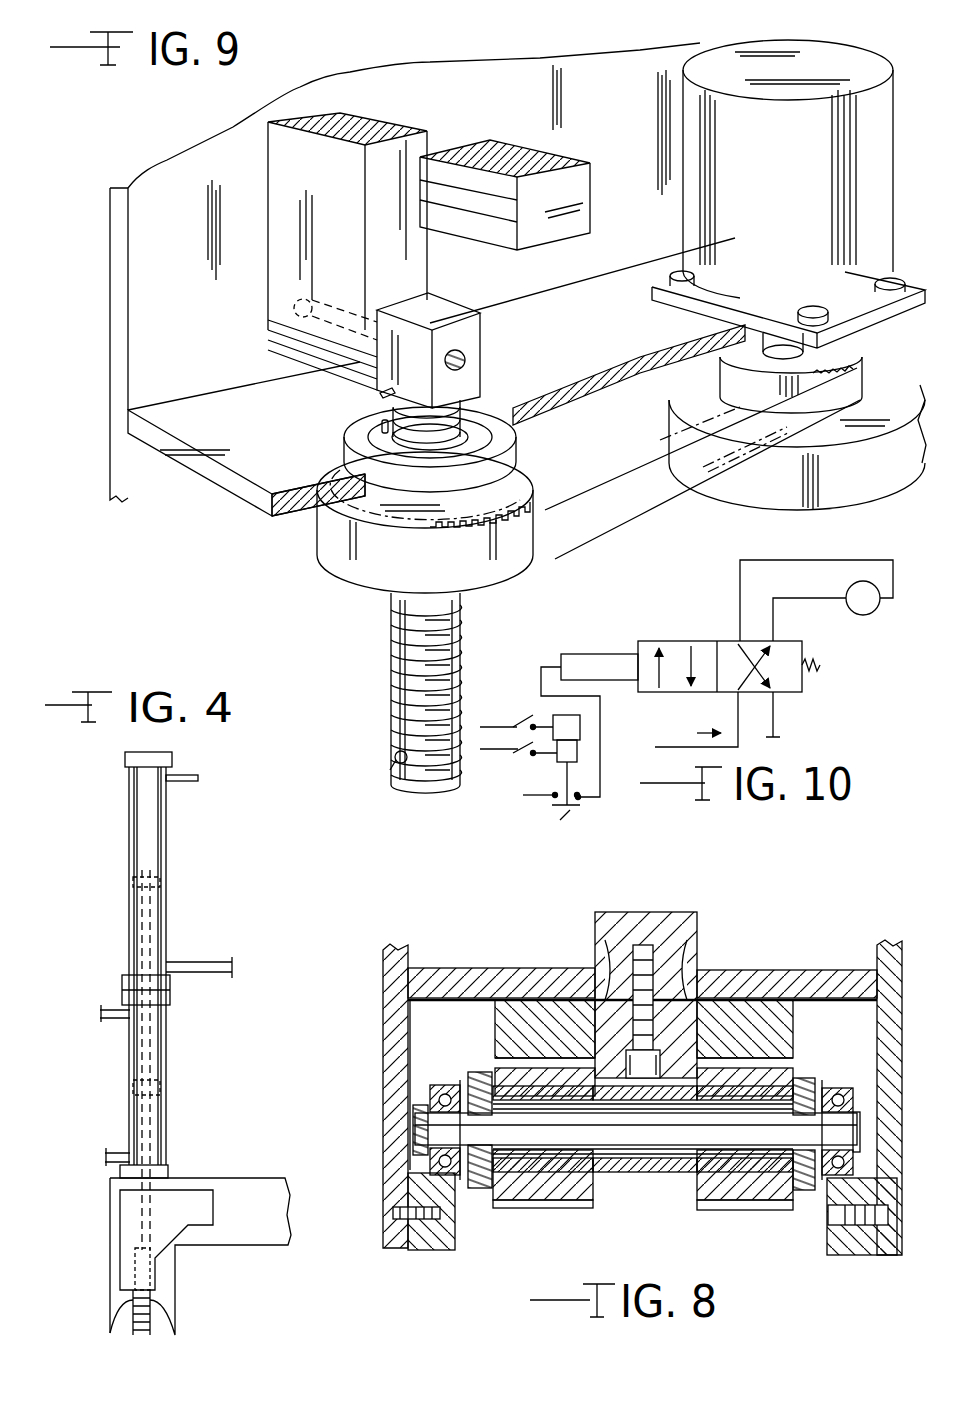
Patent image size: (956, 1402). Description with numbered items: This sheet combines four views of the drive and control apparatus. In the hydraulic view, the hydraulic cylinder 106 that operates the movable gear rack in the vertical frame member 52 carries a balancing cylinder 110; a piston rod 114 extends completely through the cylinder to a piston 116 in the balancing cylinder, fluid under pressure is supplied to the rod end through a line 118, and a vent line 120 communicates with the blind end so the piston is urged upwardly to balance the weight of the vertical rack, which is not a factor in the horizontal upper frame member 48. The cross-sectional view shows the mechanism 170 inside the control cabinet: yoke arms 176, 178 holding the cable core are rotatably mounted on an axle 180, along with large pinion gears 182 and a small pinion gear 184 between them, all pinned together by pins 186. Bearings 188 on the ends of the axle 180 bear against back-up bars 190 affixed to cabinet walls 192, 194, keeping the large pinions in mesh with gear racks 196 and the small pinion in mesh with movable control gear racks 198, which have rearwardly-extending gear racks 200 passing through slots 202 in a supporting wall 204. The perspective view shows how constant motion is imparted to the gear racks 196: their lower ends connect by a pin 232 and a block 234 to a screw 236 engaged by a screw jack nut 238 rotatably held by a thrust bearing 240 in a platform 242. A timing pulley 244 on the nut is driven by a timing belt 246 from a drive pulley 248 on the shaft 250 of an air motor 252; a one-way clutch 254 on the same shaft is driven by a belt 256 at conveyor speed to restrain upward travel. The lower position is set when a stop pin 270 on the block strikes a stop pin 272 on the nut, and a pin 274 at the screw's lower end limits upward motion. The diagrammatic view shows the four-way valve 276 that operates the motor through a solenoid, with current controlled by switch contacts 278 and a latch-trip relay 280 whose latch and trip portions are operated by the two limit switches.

In FIG. 4, the upper frame member 48 is at (258, 1178).
In FIG. 4, the vertical frame member 52 is at (180, 1277).
In FIG. 4, the hydraulic cylinder 106 is at (164, 1090).
In FIG. 4, the balancing cylinder 110 is at (126, 908).
In FIG. 4, the piston rod 114 is at (148, 1050).
In FIG. 4, the piston 116 is at (148, 870).
In FIG. 4, the line 118 is at (168, 960).
In FIG. 4, the vent line 120 is at (188, 781).
In FIG. 8, the mechanism 170 is at (522, 1242).
In FIG. 8, the arm 176 is at (805, 1078).
In FIG. 8, the arm 178 is at (483, 1073).
In FIG. 8, the axle 180 is at (798, 1136).
In FIG. 8, the large pinion gear 182 is at (515, 1208).
In FIG. 8, the small pinion gear 184 is at (640, 1175).
In FIG. 8, the pin 186 is at (495, 1012).
In FIG. 8, the bearing 188 is at (438, 1083).
In FIG. 8, the back-up bar 190 is at (425, 1250).
In FIG. 8, the wall 192 is at (900, 1240).
In FIG. 8, the wall 194 is at (383, 1133).
In FIG. 9, the gear rack 196 is at (268, 190).
In FIG. 8, the gear rack 196 is at (547, 970).
In FIG. 8, the movable control gear rack 198 is at (600, 960).
In FIG. 8, the rearwardly-extending gear rack 200 is at (690, 889).
In FIG. 8, the slot 202 is at (697, 975).
In FIG. 8, the supporting wall 204 is at (825, 968).
In FIG. 9, the pin 232 is at (470, 350).
In FIG. 9, the block 234 is at (460, 383).
In FIG. 9, the screw 236 is at (513, 443).
In FIG. 9, the screw jack nut 238 is at (386, 447).
In FIG. 9, the thrust bearing 240 is at (463, 480).
In FIG. 9, the platform 242 is at (222, 473).
In FIG. 9, the timing pulley 244 is at (585, 525).
In FIG. 9, the timing belt 246 is at (490, 578).
In FIG. 9, the drive pulley 248 is at (833, 337).
In FIG. 9, the shaft 250 is at (710, 347).
In FIG. 9, the air motor 252 is at (683, 108).
In FIG. 10, the air motor 252 is at (860, 615).
In FIG. 9, the one-way clutch 254 is at (813, 433).
In FIG. 9, the belt 256 is at (847, 480).
In FIG. 9, the stop pin 270 is at (390, 392).
In FIG. 9, the stop pin 272 is at (377, 428).
In FIG. 9, the pin 274 is at (393, 753).
In FIG. 10, the four-way valve 276 is at (790, 692).
In FIG. 10, the switch contacts 278 is at (572, 810).
In FIG. 10, the latch-trip relay 280 is at (580, 740).